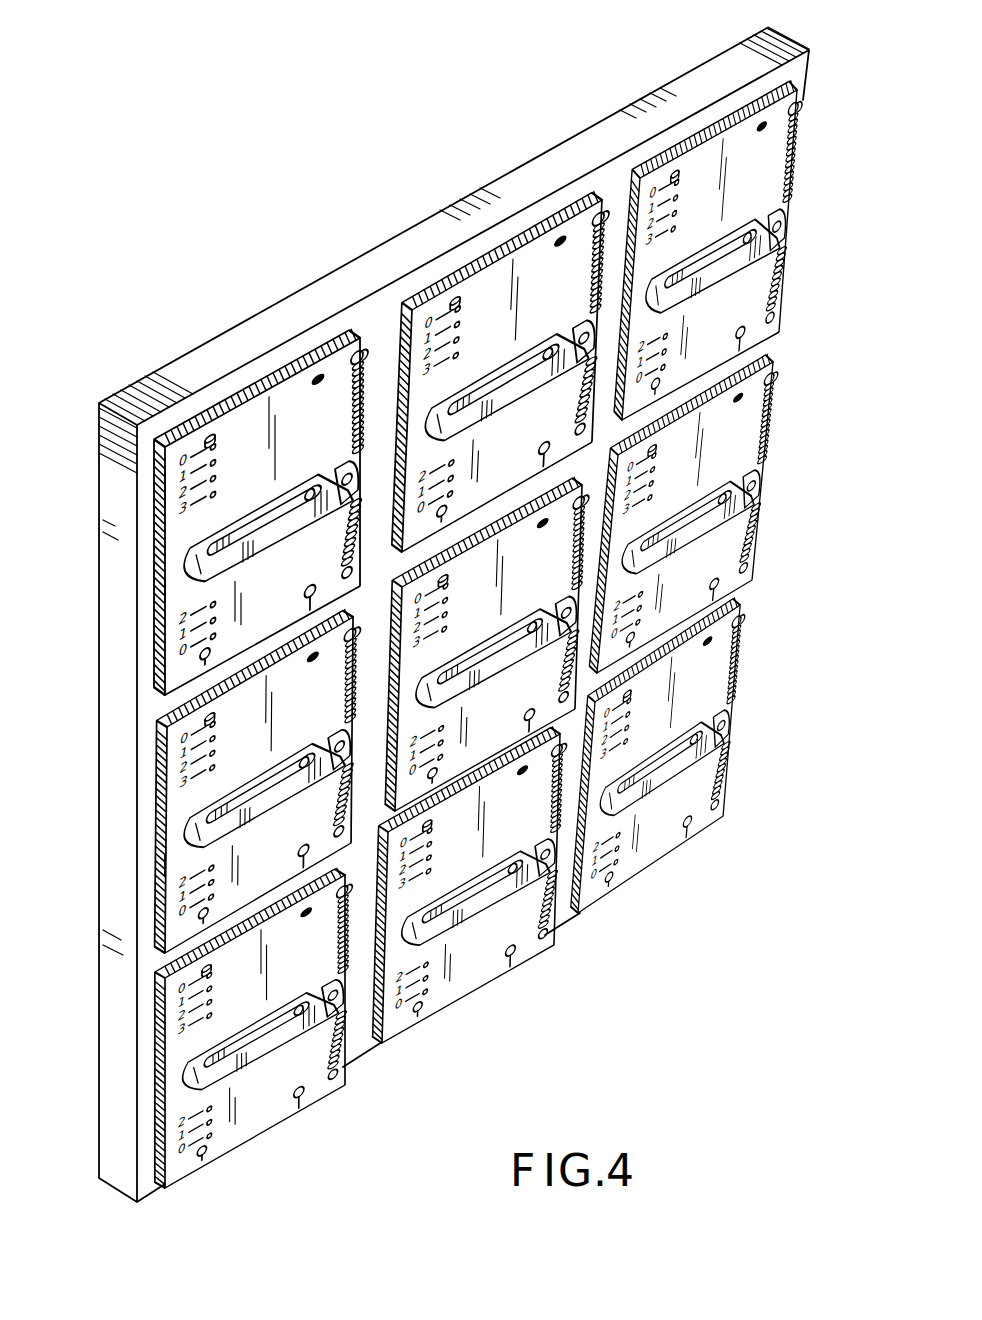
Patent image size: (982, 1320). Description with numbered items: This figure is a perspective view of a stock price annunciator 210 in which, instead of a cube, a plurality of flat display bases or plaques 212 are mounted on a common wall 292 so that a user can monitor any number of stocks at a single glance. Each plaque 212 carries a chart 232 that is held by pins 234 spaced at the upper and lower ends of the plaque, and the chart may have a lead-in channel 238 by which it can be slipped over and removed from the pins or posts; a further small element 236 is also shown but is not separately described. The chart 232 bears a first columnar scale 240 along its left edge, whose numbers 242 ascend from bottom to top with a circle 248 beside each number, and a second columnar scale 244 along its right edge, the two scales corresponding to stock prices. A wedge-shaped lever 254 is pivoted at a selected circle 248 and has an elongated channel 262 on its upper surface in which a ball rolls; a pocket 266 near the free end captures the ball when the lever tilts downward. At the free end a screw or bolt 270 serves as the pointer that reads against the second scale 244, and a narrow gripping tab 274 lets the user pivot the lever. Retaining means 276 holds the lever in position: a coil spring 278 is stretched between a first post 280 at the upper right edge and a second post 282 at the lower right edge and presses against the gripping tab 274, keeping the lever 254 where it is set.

The stock price annunciator 210 is at (451, 614).
The flat display base or plaque 212 is at (240, 418).
The chart 232 is at (170, 593).
The pin 234 is at (556, 240).
The peg 236 is at (552, 245).
The lead-in channel 238 is at (306, 607).
The first columnar scale 240 is at (165, 487).
The number 242 is at (175, 633).
The second columnar scale 244 is at (341, 686).
The circle 248 is at (218, 478).
The lever 254 is at (266, 490).
The elongated channel 262 is at (282, 503).
The pocket 266 is at (336, 476).
The screw or bolt 270 is at (318, 994).
The gripping tab 274 is at (355, 743).
The retaining means 276 is at (804, 126).
The coil spring 278 is at (800, 160).
The first post 280 is at (801, 98).
The second post 282 is at (771, 326).
The common wall 292 is at (388, 254).